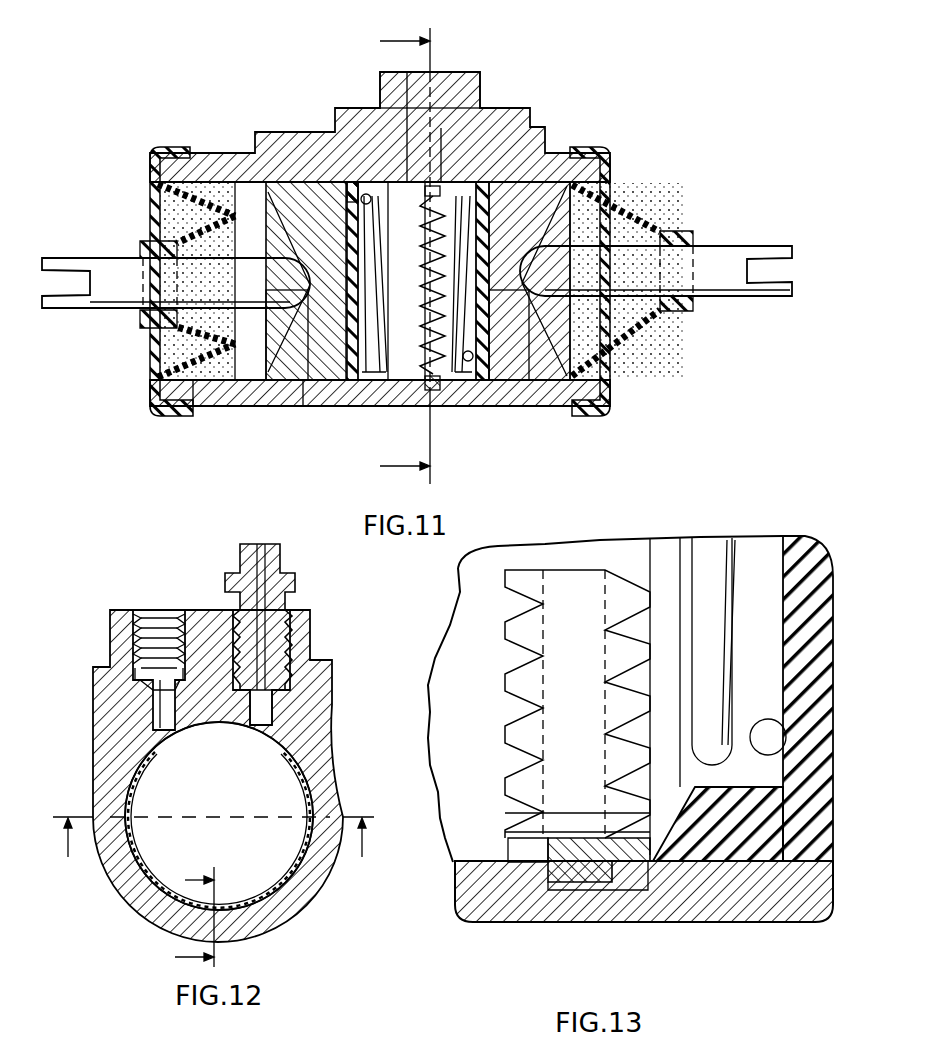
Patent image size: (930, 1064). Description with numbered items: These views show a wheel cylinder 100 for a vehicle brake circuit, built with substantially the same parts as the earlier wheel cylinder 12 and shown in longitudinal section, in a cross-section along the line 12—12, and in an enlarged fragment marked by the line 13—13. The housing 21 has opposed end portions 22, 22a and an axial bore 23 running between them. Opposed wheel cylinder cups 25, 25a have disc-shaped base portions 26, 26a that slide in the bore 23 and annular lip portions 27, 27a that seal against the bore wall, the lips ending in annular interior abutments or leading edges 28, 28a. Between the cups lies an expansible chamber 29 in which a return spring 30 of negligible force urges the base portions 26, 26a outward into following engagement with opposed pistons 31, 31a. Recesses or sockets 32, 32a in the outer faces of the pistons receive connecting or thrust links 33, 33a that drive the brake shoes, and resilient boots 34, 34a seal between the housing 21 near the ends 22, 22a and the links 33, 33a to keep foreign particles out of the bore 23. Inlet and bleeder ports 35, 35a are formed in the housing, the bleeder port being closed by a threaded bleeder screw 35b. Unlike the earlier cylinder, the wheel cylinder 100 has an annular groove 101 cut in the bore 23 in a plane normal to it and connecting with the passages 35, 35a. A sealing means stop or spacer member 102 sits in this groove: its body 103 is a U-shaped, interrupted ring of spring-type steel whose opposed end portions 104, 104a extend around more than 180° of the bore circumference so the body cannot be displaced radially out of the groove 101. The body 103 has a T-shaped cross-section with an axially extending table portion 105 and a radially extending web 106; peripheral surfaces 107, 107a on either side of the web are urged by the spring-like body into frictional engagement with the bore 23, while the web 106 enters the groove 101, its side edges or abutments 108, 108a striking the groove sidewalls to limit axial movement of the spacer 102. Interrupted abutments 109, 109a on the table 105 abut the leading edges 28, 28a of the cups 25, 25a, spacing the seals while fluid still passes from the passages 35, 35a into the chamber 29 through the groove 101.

In FIG. 11, the wheel cylinder 100 is at (303, 82).
In FIG. 12, the wheel cylinder 100 is at (98, 648).
In FIG. 11, the housing 21 is at (278, 132).
In FIG. 11, the end portion 22 is at (607, 158).
In FIG. 11, the end portion 22a is at (150, 168).
In FIG. 11, the axial bore 23 is at (240, 185).
In FIG. 12, the axial bore 23 is at (252, 828).
In FIG. 11, the wheel cylinder cup 25 is at (494, 211).
In FIG. 13, the wheel cylinder cup 25 is at (790, 876).
In FIG. 11, the wheel cylinder cup 25a is at (348, 180).
In FIG. 11, the base portion 26 is at (498, 306).
In FIG. 13, the base portion 26 is at (805, 555).
In FIG. 11, the base portion 26a is at (345, 246).
In FIG. 11, the annular lip portion 27 is at (462, 385).
In FIG. 13, the annular lip portion 27 is at (730, 885).
In FIG. 11, the annular lip portion 27a is at (358, 384).
In FIG. 11, the annular interior end 28 is at (450, 180).
In FIG. 13, the annular interior end 28 is at (672, 845).
In FIG. 11, the annular interior end 28a is at (402, 182).
In FIG. 11, the expansible chamber 29 is at (410, 383).
In FIG. 11, the return spring 30 is at (350, 348).
In FIG. 11, the piston 31 is at (522, 390).
In FIG. 11, the piston 31a is at (290, 388).
In FIG. 11, the recess 32 is at (548, 284).
In FIG. 11, the recess 32a is at (300, 282).
In FIG. 11, the connecting link 33 is at (705, 284).
In FIG. 11, the connecting link 33a is at (108, 298).
In FIG. 11, the resilient boot 34 is at (622, 218).
In FIG. 11, the resilient boot 34a is at (185, 232).
In FIG. 11, the inlet port 35 is at (465, 72).
In FIG. 12, the inlet port 35 is at (147, 612).
In FIG. 12, the bleeder port 35a is at (290, 630).
In FIG. 12, the fitting stem 35b is at (235, 562).
In FIG. 11, the wheel cylinder 12 is at (388, 256).
In FIG. 12, the section line 13 is at (175, 906).
In FIG. 12, the 180 degree span 180 is at (66, 855).
In FIG. 12, the annular groove 101 is at (192, 730).
In FIG. 13, the annular groove 101 is at (630, 905).
In FIG. 13, the sealing means stop 102 is at (645, 568).
In FIG. 13, the body portion 103 is at (585, 568).
In FIG. 12, the end portion 104 is at (145, 760).
In FIG. 12, the end portion 104a is at (219, 830).
In FIG. 13, the table portion 105 is at (575, 835).
In FIG. 13, the web portion 106 is at (580, 890).
In FIG. 13, the peripheral surface 107 is at (650, 875).
In FIG. 13, the peripheral surface 107a is at (468, 870).
In FIG. 13, the side edge 108 is at (618, 887).
In FIG. 13, the side edge 108a is at (550, 895).
In FIG. 13, the interrupted abutment 109 is at (650, 665).
In FIG. 13, the interrupted abutment 109a is at (505, 690).